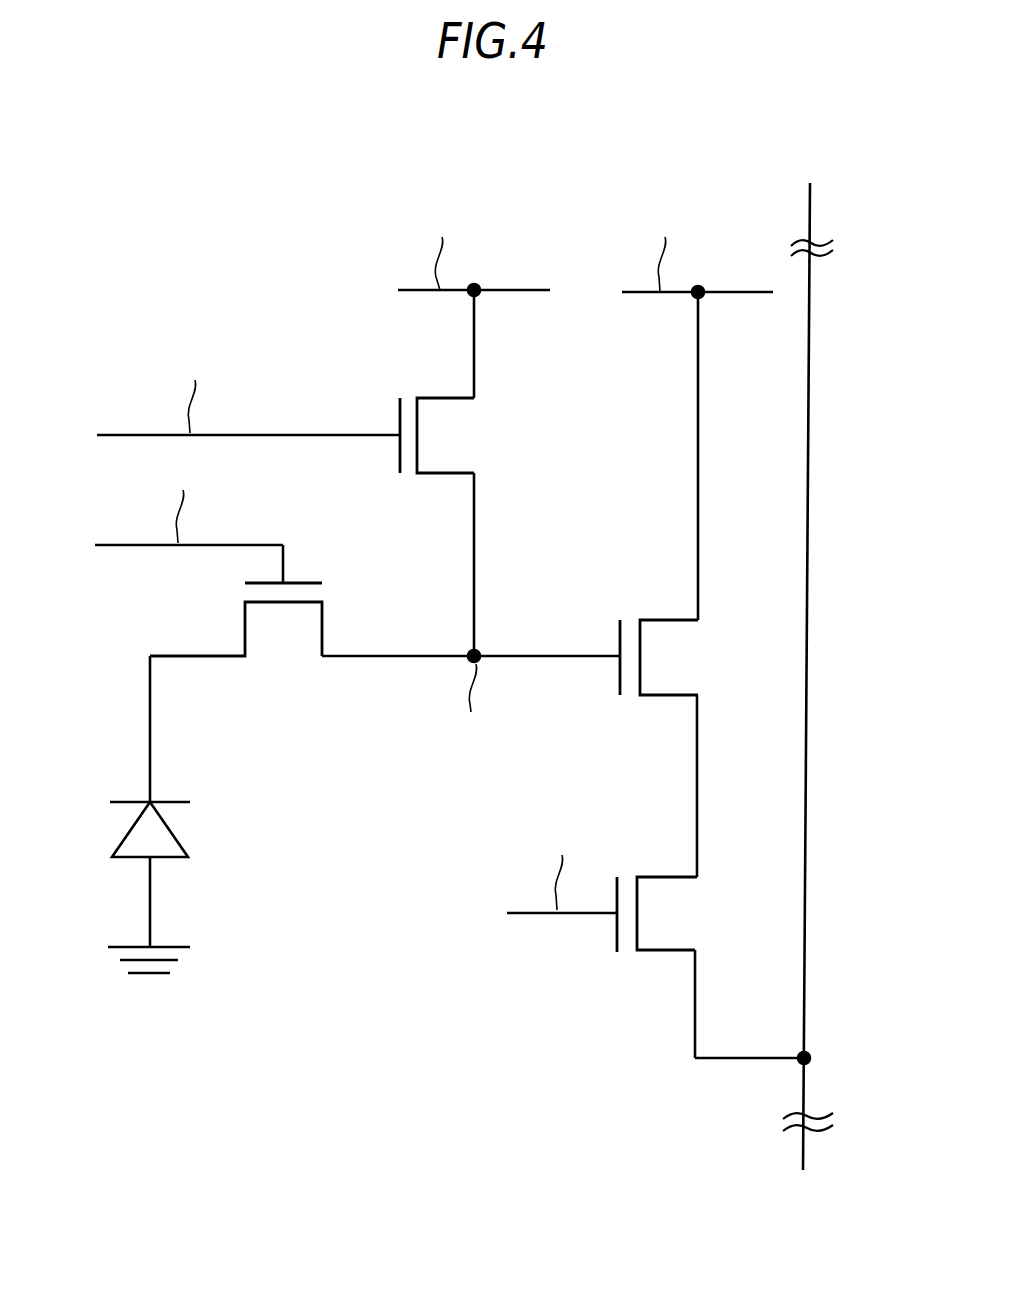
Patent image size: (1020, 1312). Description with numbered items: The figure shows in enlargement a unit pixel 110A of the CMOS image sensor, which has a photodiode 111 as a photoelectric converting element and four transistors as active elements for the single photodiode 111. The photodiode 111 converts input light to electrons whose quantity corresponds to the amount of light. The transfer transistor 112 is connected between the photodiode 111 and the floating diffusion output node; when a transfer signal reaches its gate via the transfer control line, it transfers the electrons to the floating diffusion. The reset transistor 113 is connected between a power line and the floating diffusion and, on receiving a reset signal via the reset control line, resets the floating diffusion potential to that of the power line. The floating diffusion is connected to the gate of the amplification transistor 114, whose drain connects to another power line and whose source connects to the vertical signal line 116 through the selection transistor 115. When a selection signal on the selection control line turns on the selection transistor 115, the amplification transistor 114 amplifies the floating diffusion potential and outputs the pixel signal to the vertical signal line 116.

The unit pixel 110A is at (190, 147).
The photodiode 111 is at (130, 825).
The transfer transistor 112 is at (292, 638).
The reset transistor 113 is at (455, 430).
The amplification transistor 114 is at (657, 668).
The selection transistor 115 is at (653, 922).
The vertical signal line 116 is at (808, 793).